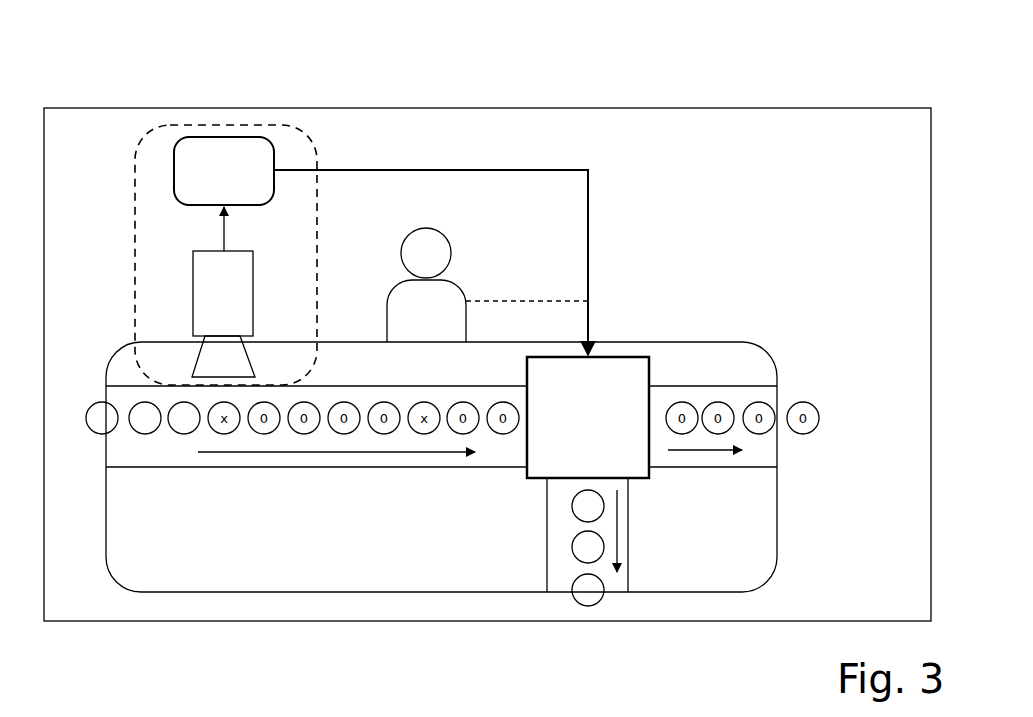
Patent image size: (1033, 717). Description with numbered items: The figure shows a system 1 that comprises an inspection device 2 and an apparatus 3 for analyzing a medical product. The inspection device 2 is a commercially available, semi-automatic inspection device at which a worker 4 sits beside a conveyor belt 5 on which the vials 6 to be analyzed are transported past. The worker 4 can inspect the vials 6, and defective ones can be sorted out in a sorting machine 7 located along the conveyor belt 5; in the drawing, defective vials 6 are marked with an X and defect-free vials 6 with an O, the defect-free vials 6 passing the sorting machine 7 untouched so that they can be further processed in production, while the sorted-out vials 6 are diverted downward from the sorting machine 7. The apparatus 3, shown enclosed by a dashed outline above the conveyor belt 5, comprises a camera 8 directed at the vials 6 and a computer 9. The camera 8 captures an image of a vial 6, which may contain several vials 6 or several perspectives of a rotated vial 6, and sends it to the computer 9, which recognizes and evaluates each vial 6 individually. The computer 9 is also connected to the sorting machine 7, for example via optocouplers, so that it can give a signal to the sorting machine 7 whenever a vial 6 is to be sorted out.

The system 1 is at (747, 83).
The inspection device 2 is at (750, 309).
The apparatus for analyzing a medical product 3 is at (349, 197).
The worker 4 is at (487, 285).
The conveyor belt 5 is at (344, 486).
The vial 6 is at (101, 399).
The sorting machine 7 is at (588, 481).
The camera 8 is at (223, 292).
The computer 9 is at (381, 246).